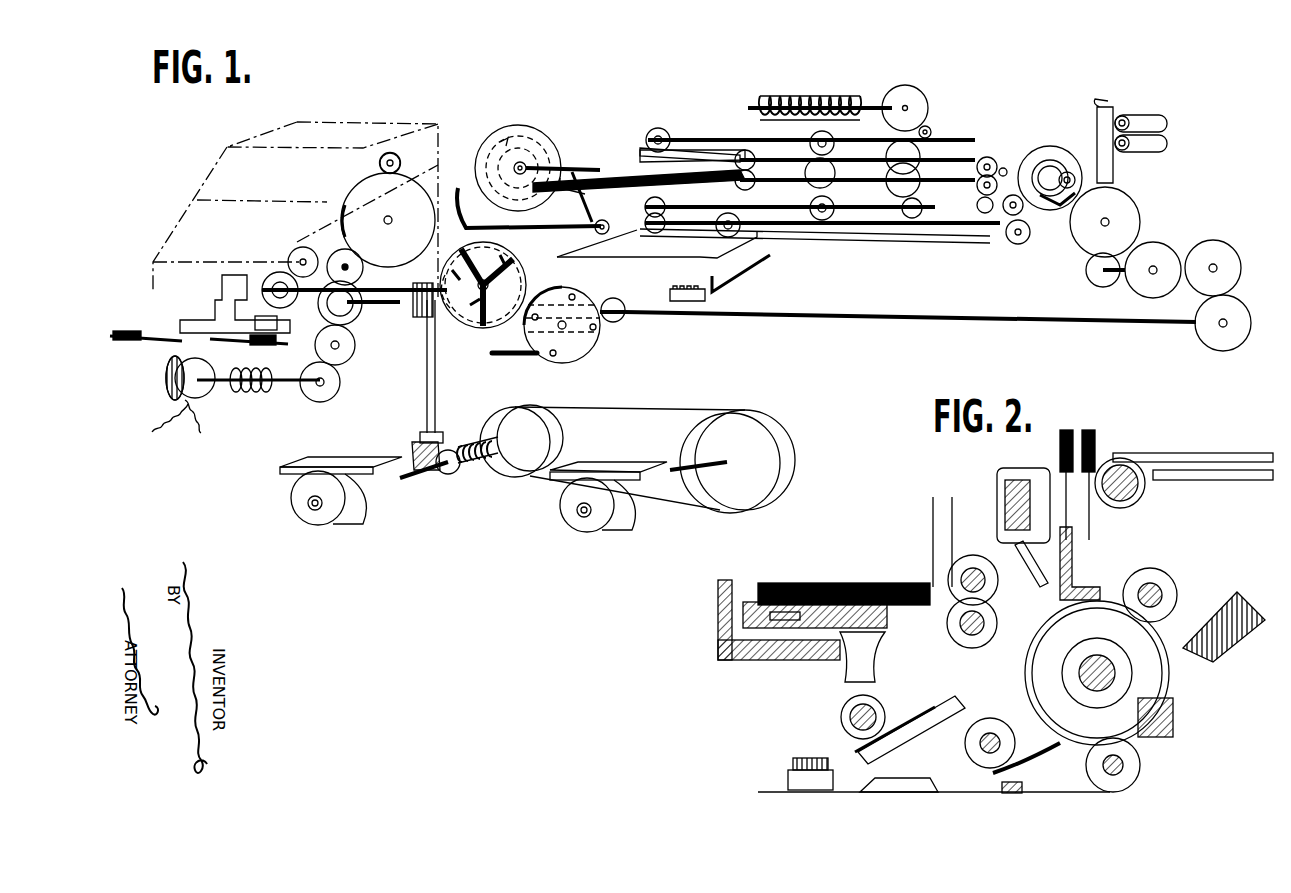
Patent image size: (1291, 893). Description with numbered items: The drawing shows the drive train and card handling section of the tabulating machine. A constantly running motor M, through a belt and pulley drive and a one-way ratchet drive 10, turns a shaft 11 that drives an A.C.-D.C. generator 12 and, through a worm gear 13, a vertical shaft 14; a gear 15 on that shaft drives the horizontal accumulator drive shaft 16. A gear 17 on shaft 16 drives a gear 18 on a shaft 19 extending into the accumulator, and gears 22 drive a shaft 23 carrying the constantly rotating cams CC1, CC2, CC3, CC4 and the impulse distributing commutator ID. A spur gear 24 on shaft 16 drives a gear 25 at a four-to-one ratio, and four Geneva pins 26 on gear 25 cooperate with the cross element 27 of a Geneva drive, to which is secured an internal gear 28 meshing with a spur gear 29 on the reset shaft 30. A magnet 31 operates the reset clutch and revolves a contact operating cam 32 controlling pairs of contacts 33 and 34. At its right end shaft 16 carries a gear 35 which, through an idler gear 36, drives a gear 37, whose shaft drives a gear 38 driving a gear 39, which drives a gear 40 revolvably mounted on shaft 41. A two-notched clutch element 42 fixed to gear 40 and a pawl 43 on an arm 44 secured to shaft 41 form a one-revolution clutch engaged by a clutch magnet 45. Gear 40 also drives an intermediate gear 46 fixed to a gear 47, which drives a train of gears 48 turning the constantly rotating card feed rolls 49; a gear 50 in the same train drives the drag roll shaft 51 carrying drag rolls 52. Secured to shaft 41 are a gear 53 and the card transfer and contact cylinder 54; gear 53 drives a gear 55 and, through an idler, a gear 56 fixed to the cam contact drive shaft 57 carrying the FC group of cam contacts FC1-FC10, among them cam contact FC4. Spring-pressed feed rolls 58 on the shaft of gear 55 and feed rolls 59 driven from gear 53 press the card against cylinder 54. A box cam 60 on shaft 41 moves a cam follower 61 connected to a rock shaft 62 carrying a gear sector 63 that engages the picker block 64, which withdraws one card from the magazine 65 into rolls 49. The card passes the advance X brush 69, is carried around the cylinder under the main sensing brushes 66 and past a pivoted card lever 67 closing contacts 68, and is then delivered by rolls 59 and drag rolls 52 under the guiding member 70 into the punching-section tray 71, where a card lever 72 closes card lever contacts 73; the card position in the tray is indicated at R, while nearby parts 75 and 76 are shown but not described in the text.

In FIG. 1, the one-way ratchet drive 10 is at (532, 425).
In FIG. 1, the shaft 11 is at (430, 472).
In FIG. 1, the A. C.-D. C. generator 12 is at (343, 515).
In FIG. 1, the worm gear 13 is at (480, 470).
In FIG. 1, the vertical shaft 14 is at (436, 370).
In FIG. 1, the gear 15 is at (393, 320).
In FIG. 1, the accumulator drive shaft 16 is at (347, 340).
In FIG. 1, the gear 17 is at (328, 310).
In FIG. 1, the gear 18 is at (336, 255).
In FIG. 1, the shaft 19 is at (347, 266).
In FIG. 1, the gears 22 is at (334, 392).
In FIG. 1, the shaft 23 is at (210, 385).
In FIG. 1, the spur gear 24 is at (624, 318).
In FIG. 1, the gear 25 is at (593, 350).
In FIG. 1, the Geneva pins 26 is at (500, 358).
In FIG. 1, the Geneva drive cross element 27 is at (500, 273).
In FIG. 1, the internal gear 28 is at (492, 243).
In FIG. 1, the spur gear 29 is at (463, 316).
In FIG. 1, the reset shaft 30 is at (398, 288).
In FIG. 1, the magnet 31 is at (275, 332).
In FIG. 1, the contact operating cam 32 is at (240, 287).
In FIG. 1, the contacts 33 is at (160, 344).
In FIG. 1, the contacts 34 is at (222, 345).
In FIG. 1, the gear 35 is at (1240, 310).
In FIG. 1, the idler gear 36 is at (1233, 255).
In FIG. 1, the gear 37 is at (1165, 247).
In FIG. 1, the gear 38 is at (1101, 287).
In FIG. 1, the gear 39 is at (1128, 210).
In FIG. 1, the gear 40 is at (1050, 146).
In FIG. 1, the shaft 41 is at (530, 166).
In FIG. 2, the shaft 41 is at (1105, 680).
In FIG. 1, the one-revolution clutch element 42 is at (1042, 168).
In FIG. 1, the pawl 43 is at (1060, 200).
In FIG. 1, the arm 44 is at (1069, 172).
In FIG. 1, the clutch magnet 45 is at (1141, 116).
In FIG. 1, the intermediate gear 46 is at (1008, 214).
In FIG. 1, the gear 47 is at (981, 212).
In FIG. 1, the train of gears 48 is at (979, 162).
In FIG. 1, the card feed rolls 49 is at (745, 151).
In FIG. 2, the card feed rolls 49 is at (955, 573).
In FIG. 1, the gear 50 is at (1020, 245).
In FIG. 1, the drag roll shaft 51 is at (846, 240).
In FIG. 2, the drag roll shaft 51 is at (990, 732).
In FIG. 1, the drag rolls 52 is at (720, 232).
In FIG. 2, the drag rolls 52 is at (1010, 735).
In FIG. 1, the gear 53 is at (893, 150).
In FIG. 1, the card transfer and contact cylinder 54 is at (690, 148).
In FIG. 2, the card transfer and contact cylinder 54 is at (1026, 663).
In FIG. 1, the gear 55 is at (929, 128).
In FIG. 1, the gear 56 is at (898, 90).
In FIG. 1, the cam contact drive shaft 57 is at (907, 106).
In FIG. 2, the cam contact drive shaft 57 is at (1135, 490).
In FIG. 1, the card feed rolls 58 is at (658, 128).
In FIG. 2, the card feed rolls 58 is at (1165, 580).
In FIG. 1, the card feed rolls 59 is at (818, 220).
In FIG. 2, the card feed rolls 59 is at (1132, 780).
In FIG. 1, the box cam 60 is at (522, 134).
In FIG. 1, the cam follower 61 is at (473, 183).
In FIG. 1, the rock shaft 62 is at (575, 226).
In FIG. 1, the gear sector 63 is at (597, 205).
In FIG. 2, the gear sector 63 is at (845, 680).
In FIG. 2, the picker block 64 is at (782, 636).
In FIG. 1, the magazine 65 is at (639, 171).
In FIG. 2, the magazine 65 is at (855, 583).
In FIG. 2, the main card sensing brushes 66 is at (1190, 650).
In FIG. 2, the card lever 67 is at (1098, 570).
In FIG. 2, the contacts 68 is at (1078, 515).
In FIG. 2, the contact brush 69 is at (1032, 575).
In FIG. 2, the guiding member 70 is at (962, 790).
In FIG. 2, the tray 71 is at (909, 790).
In FIG. 2, the card lever 72 is at (862, 782).
In FIG. 2, the card lever contacts 73 is at (856, 754).
In FIG. 1, the ratchet 75 is at (687, 284).
In FIG. 1, the arm 76 is at (752, 272).
In FIG. 1, the card position R is at (628, 258).
In FIG. 1, the motor M is at (632, 518).
In FIG. 1, the impulse distributing commutator ID is at (165, 370).
In FIG. 1, the cam CC1 is at (234, 390).
In FIG. 1, the cam CC2 is at (245, 391).
In FIG. 1, the cam CC3 is at (257, 391).
In FIG. 1, the cam CC4 is at (270, 389).
In FIG. 1, the FC group of cam contacts FC1-FC10 is at (776, 97).
In FIG. 2, the FC cam contact FC4 is at (1178, 455).